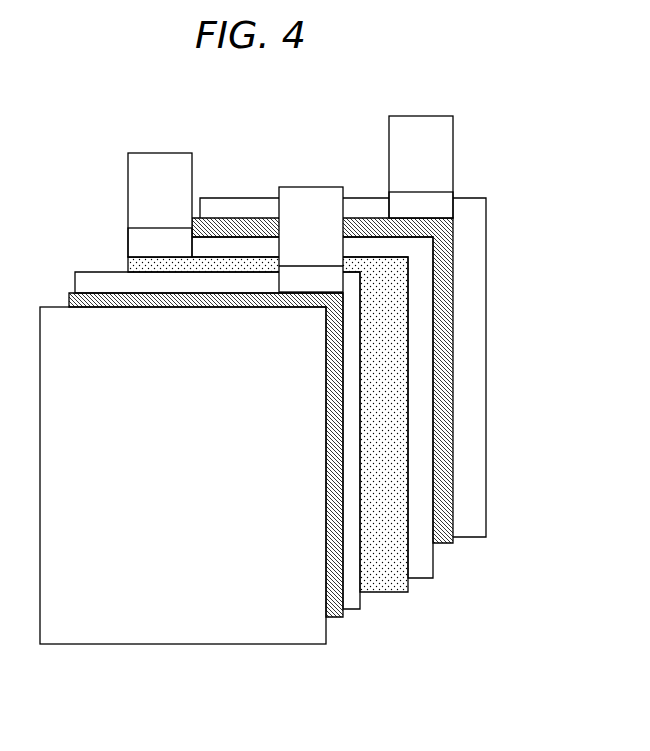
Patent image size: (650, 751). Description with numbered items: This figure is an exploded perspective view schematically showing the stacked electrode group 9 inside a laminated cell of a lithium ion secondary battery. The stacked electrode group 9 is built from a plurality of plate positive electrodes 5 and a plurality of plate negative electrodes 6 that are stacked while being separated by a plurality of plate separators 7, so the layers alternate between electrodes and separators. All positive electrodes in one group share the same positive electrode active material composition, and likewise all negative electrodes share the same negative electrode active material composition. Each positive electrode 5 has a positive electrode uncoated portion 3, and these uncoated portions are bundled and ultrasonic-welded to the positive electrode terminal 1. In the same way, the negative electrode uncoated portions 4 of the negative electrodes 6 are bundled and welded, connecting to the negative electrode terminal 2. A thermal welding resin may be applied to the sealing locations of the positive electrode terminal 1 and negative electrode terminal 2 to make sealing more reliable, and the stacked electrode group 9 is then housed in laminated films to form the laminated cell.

The positive electrode terminal 1 is at (138, 187).
The negative electrode terminal 2 is at (442, 145).
The positive electrode uncoated portion 3 is at (138, 246).
The negative electrode uncoated portion 4 is at (443, 198).
The positive electrode 5 is at (392, 303).
The negative electrode 6 is at (445, 343).
The separator 7 is at (420, 403).
The stacked electrode group 9 is at (286, 116).